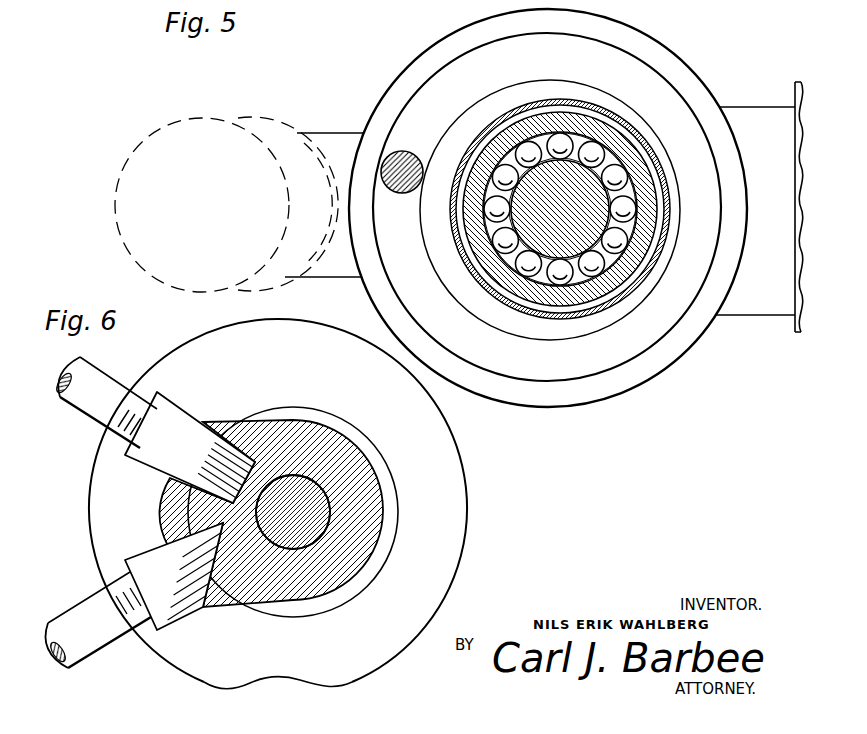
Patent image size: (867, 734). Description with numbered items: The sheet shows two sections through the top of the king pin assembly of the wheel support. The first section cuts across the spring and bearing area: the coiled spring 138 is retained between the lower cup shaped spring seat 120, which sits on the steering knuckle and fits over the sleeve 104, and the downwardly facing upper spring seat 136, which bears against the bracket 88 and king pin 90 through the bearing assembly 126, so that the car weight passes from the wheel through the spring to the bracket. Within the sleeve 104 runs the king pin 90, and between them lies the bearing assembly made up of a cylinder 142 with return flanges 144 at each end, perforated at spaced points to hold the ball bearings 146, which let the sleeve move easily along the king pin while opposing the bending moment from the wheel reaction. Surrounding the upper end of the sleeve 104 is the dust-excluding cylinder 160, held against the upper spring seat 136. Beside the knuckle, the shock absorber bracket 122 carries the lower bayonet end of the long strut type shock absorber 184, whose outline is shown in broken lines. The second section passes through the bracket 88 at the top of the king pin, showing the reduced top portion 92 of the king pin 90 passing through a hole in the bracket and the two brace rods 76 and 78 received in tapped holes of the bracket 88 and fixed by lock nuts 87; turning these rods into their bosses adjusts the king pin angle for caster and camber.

In FIG. 5, the cup shaped spring seat 120 is at (687, 337).
In FIG. 5, the coiled spring 138 is at (690, 134).
In FIG. 5, the cylinder 142 is at (634, 268).
In FIG. 5, the cylinder 160 is at (658, 254).
In FIG. 5, the sleeve 104 is at (640, 172).
In FIG. 5, the return flanges 144 is at (633, 187).
In FIG. 5, the ball bearings 146 is at (636, 208).
In FIG. 5, the king pin 90 is at (590, 204).
In FIG. 5, the shock absorber bracket 122 is at (336, 133).
In FIG. 5, the strut type shock absorber 184 is at (216, 122).
In FIG. 6, the cup shaped spring seat 136 is at (452, 441).
In FIG. 6, the bearing assembly 126 is at (391, 558).
In FIG. 6, the bracket 88 is at (271, 513).
In FIG. 6, the top portion 92 is at (304, 506).
In FIG. 6, the lock nuts 87 is at (182, 412).
In FIG. 6, the brace rod 78 is at (97, 372).
In FIG. 6, the brace rod 76 is at (70, 609).